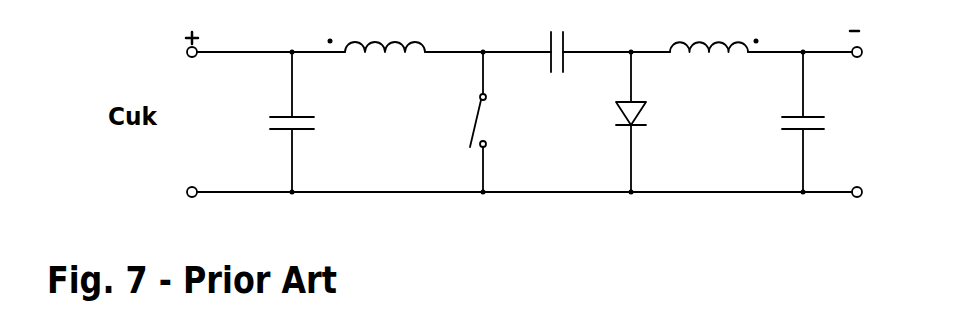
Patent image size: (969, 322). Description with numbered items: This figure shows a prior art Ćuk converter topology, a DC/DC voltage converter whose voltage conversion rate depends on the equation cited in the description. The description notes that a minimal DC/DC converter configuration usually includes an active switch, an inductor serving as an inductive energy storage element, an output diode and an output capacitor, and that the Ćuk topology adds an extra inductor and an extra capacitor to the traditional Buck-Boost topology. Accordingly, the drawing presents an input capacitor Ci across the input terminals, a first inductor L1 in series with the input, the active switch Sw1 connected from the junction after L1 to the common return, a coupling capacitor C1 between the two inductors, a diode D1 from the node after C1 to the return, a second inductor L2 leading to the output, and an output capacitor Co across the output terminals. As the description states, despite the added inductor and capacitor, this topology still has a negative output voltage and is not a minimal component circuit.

The input capacitor Ci is at (311, 122).
The input inductor L1 is at (385, 26).
The switch Sw1 is at (447, 122).
The energy transfer capacitor C1 is at (558, 36).
The diode D1 is at (589, 122).
The output inductor L2 is at (709, 26).
The output capacitor Co is at (828, 122).